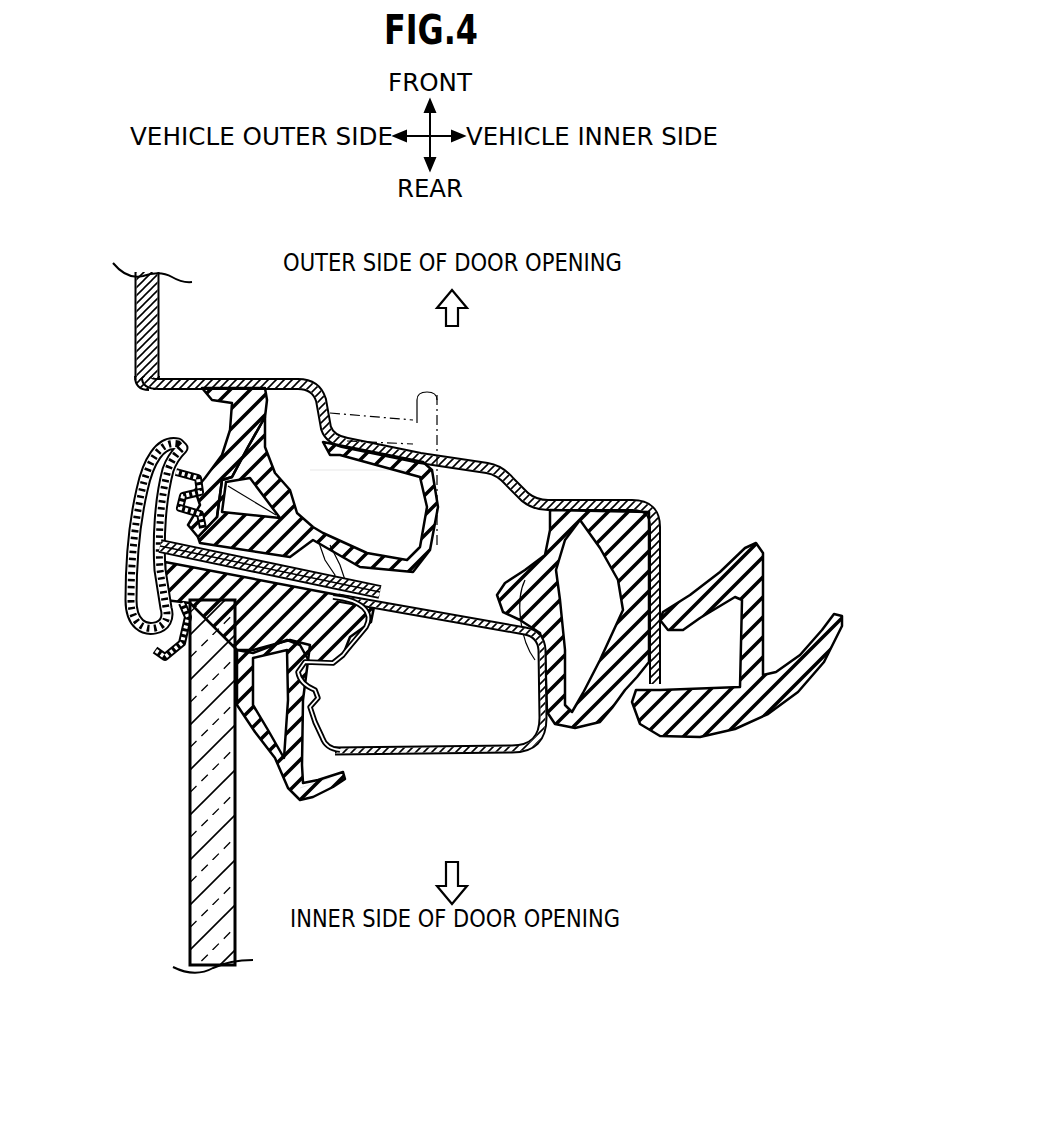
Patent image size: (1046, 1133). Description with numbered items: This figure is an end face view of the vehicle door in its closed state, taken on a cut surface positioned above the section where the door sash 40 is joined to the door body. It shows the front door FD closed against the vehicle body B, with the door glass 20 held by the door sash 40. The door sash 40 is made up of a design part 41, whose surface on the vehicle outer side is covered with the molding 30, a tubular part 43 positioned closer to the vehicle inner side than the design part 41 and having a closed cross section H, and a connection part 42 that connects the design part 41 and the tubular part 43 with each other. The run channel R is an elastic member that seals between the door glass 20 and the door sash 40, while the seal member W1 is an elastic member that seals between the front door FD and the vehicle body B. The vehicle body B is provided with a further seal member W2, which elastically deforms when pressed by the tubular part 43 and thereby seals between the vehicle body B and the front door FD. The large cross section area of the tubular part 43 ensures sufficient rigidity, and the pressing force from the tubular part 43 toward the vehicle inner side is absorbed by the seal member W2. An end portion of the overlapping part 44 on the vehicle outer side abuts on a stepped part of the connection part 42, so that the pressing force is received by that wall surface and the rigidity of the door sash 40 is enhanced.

The door glass 20 is at (238, 858).
The molding 30 is at (130, 630).
The door sash 40 is at (478, 765).
The design part 41 is at (165, 642).
The connection part 42 is at (288, 578).
The tubular part 43 is at (433, 760).
The overlapping part 44 is at (352, 578).
The vehicle body B is at (533, 500).
The closed cross section H is at (441, 720).
The run channel R is at (310, 775).
The seal member W1 is at (432, 557).
The seal member W2 is at (705, 732).
The front door FD is at (143, 734).